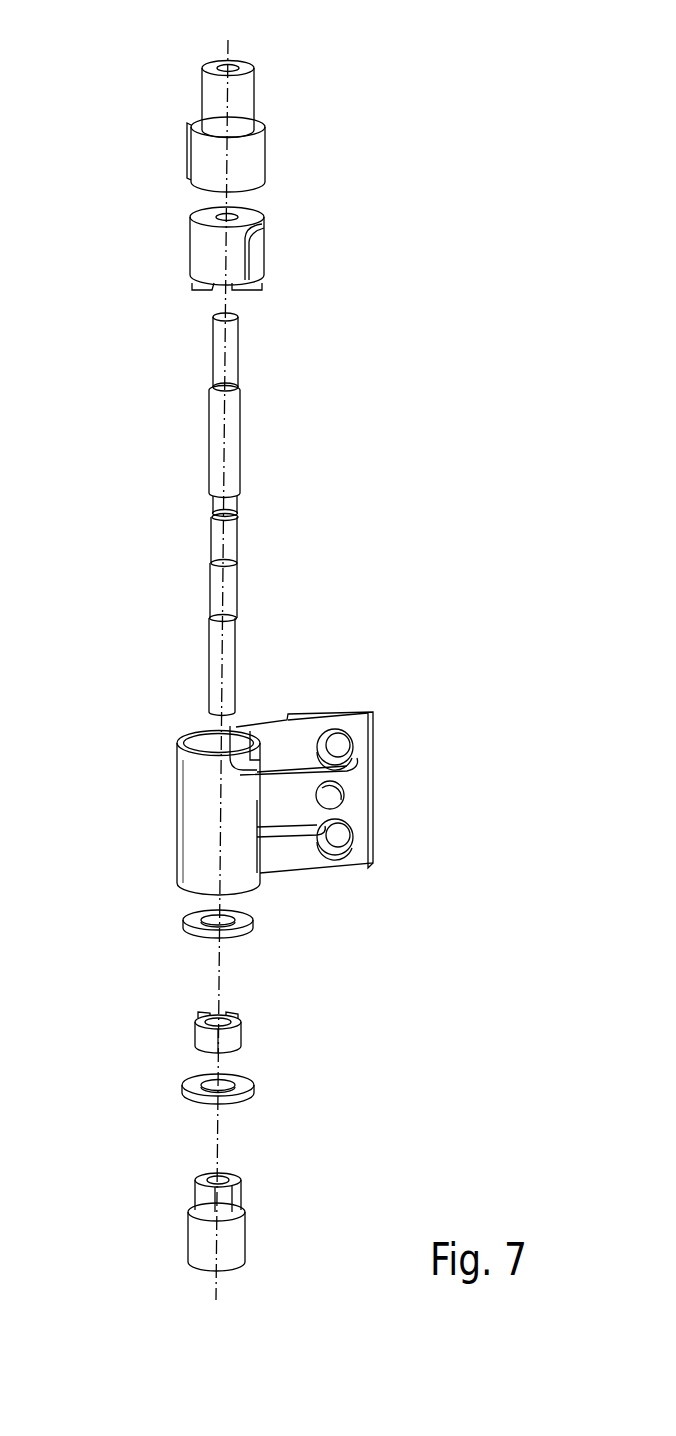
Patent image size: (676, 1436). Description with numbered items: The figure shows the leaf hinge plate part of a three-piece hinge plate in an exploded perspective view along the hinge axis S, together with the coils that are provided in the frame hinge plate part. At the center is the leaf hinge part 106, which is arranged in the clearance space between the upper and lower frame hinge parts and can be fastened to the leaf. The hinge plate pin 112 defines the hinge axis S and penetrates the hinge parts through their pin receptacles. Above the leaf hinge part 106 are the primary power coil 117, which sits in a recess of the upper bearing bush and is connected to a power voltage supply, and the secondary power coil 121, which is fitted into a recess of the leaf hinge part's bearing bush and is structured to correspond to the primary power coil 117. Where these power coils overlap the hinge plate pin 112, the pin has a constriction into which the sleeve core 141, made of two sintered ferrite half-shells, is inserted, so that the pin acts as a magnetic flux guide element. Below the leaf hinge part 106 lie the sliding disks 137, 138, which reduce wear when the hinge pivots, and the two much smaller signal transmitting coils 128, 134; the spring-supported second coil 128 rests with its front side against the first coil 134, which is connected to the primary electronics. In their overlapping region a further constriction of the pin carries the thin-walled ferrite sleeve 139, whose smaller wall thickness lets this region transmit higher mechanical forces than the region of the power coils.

The primary power coil 117 is at (253, 158).
The secondary power coil 121 is at (253, 250).
The hinge plate pin 112 is at (232, 352).
The sleeve core 141 is at (229, 435).
The sleeve 139 is at (228, 590).
The leaf hinge part 106 is at (150, 850).
The sliding disk 137 is at (247, 918).
The signal transmitting coil 128 is at (245, 1037).
The sliding disk 138 is at (250, 1083).
The signal transmitting coil 134 is at (235, 1197).
The hinge axis S is at (218, 1140).